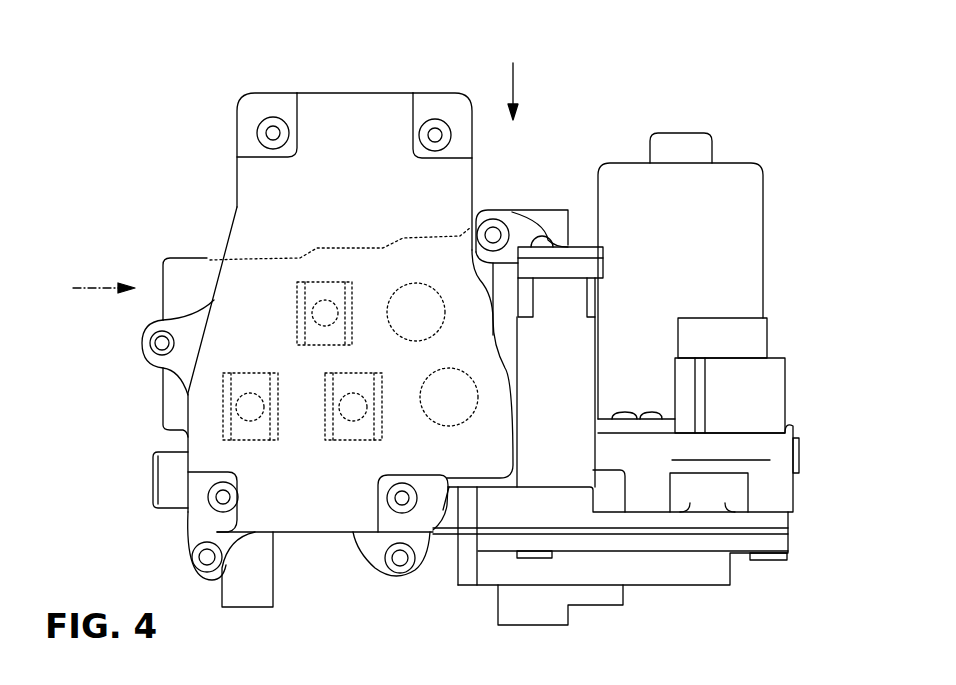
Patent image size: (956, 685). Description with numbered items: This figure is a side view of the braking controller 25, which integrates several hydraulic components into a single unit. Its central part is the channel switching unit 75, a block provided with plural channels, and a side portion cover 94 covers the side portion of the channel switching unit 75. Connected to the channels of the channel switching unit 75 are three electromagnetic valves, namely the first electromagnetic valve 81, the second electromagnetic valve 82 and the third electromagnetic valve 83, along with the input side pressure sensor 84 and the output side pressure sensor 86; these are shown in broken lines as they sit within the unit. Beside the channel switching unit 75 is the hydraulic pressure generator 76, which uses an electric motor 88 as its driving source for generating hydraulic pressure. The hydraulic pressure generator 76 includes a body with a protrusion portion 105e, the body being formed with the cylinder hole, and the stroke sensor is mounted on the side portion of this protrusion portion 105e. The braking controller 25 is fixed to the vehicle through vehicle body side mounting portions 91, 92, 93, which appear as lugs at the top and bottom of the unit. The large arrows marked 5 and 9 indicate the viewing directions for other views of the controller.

The braking controller 25 is at (647, 88).
The channel switching unit 75 is at (232, 108).
The side portion cover 94 is at (352, 113).
The second electromagnetic valve 82 is at (297, 302).
The first electromagnetic valve 81 is at (224, 401).
The third electromagnetic valve 83 is at (352, 440).
The output side pressure sensor 86 is at (415, 283).
The input side pressure sensor 84 is at (462, 427).
The vehicle body side mounting portion 92 is at (250, 607).
The vehicle body side mounting portion 91 is at (553, 210).
The hydraulic pressure generator 76 is at (768, 163).
The electric motor 88 is at (747, 242).
The protrusion portion 105e is at (570, 336).
The vehicle body side mounting portion 93 is at (595, 605).
The view direction arrow 9 is at (104, 263).
The view direction arrow 5 is at (530, 85).